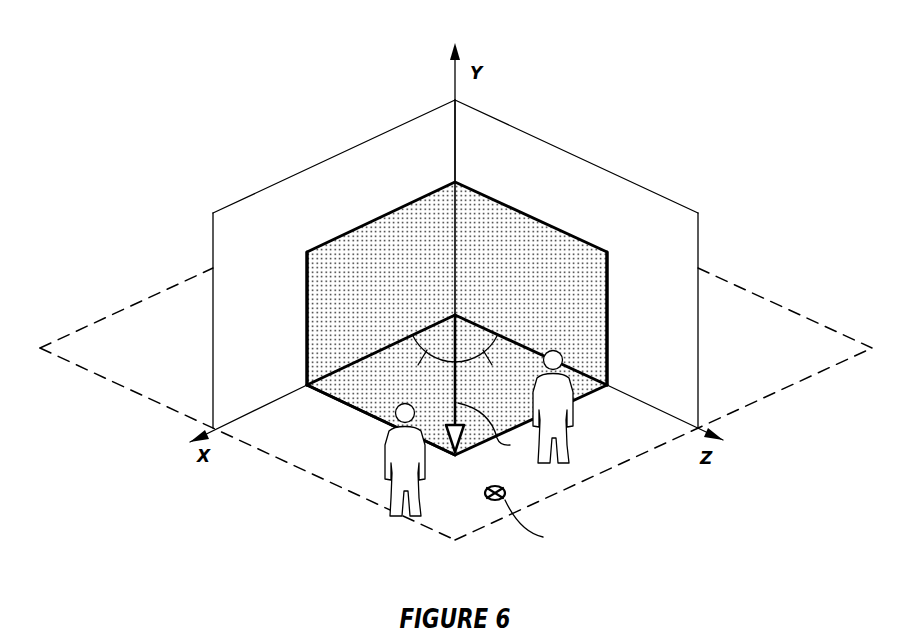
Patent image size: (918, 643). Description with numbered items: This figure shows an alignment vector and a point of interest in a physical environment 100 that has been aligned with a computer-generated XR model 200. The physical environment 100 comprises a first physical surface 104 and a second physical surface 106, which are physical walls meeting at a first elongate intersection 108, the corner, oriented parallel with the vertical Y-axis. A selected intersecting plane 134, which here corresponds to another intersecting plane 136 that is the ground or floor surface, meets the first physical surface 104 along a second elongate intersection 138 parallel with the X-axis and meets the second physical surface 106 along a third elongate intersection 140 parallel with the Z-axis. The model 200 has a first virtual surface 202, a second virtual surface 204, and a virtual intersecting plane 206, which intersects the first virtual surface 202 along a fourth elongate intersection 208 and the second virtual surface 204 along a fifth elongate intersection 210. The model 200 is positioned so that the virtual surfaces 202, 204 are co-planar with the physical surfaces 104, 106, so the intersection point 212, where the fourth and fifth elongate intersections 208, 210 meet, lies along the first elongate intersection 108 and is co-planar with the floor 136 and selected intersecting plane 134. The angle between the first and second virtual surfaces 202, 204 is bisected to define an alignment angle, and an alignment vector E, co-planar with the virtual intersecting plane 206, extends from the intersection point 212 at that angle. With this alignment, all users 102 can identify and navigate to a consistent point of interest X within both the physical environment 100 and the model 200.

The physical environment 100 is at (215, 156).
The user 102 is at (390, 513).
The first physical surface 104 is at (250, 242).
The second physical surface 106 is at (652, 215).
The first elongate intersection 108 is at (456, 125).
The selected intersecting plane 134 is at (456, 404).
The intersecting plane 136 is at (313, 478).
The second elongate intersection 138 is at (265, 400).
The third elongate intersection 140 is at (667, 412).
The XR model 200 is at (457, 253).
The first virtual surface 202 is at (307, 300).
The second virtual surface 204 is at (607, 282).
The virtual intersecting plane 206 is at (363, 413).
The fourth elongate intersection 208 is at (330, 372).
The fifth elongate intersection 210 is at (572, 367).
The intersection point 212 is at (456, 315).